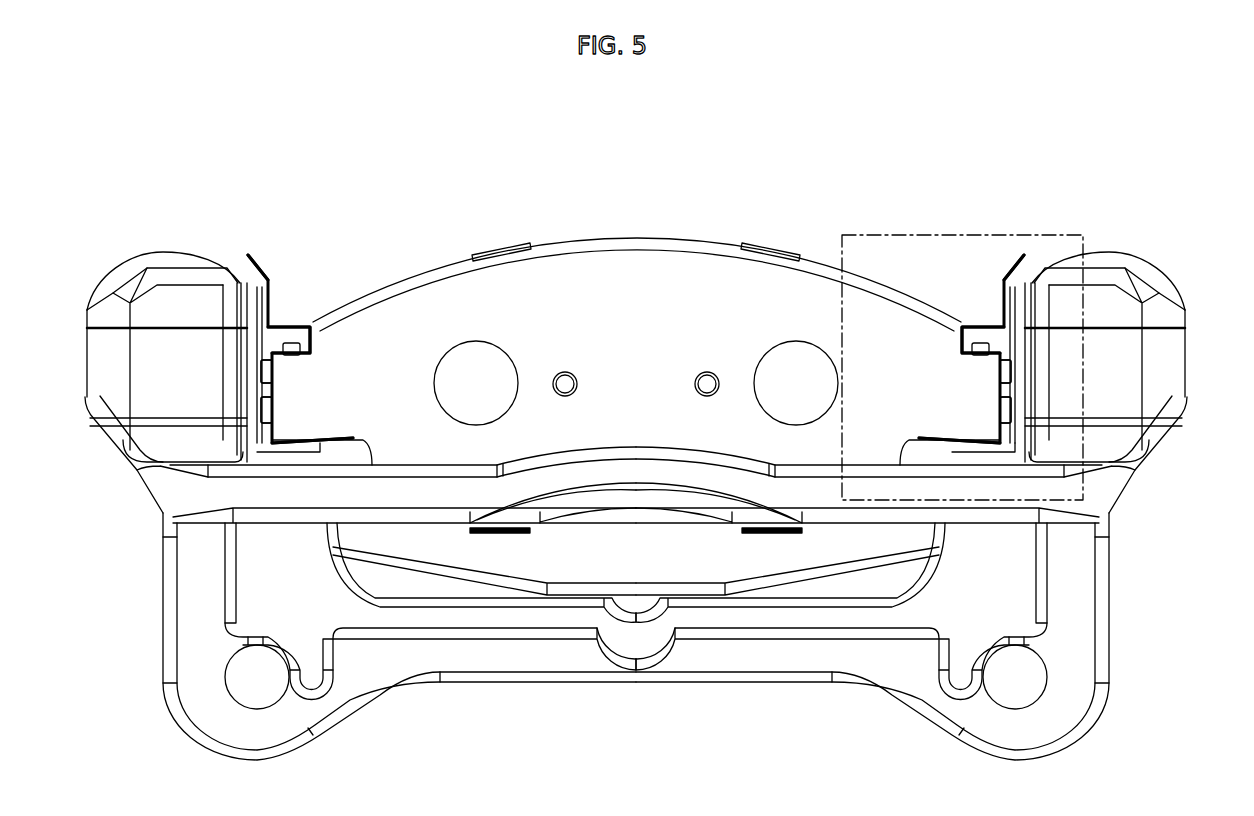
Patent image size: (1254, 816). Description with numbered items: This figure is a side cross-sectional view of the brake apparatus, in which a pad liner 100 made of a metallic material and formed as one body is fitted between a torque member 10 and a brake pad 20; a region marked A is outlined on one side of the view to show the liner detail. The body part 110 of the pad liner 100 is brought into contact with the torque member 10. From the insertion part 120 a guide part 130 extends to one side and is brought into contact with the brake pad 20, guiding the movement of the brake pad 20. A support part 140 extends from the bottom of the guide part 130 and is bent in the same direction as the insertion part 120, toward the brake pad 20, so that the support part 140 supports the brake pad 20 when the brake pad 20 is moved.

The torque member 10 is at (178, 303).
The brake pad 20 is at (673, 270).
The pad liner 100 is at (743, 319).
The body part 110 is at (258, 252).
The insertion part 120 is at (293, 322).
The guide part 130 is at (278, 400).
The support part 140 is at (343, 433).
The enlarged detail region A is at (1020, 232).